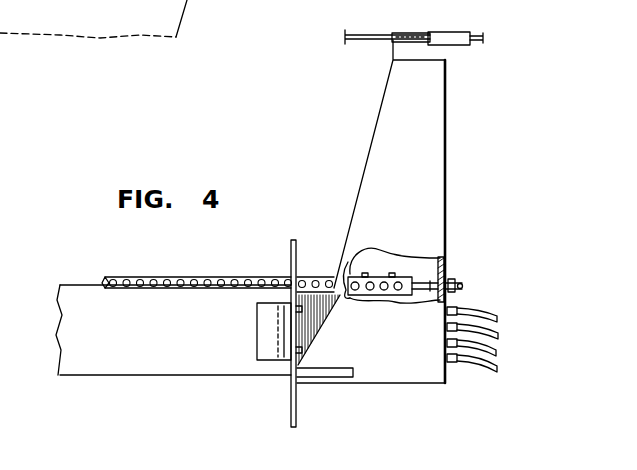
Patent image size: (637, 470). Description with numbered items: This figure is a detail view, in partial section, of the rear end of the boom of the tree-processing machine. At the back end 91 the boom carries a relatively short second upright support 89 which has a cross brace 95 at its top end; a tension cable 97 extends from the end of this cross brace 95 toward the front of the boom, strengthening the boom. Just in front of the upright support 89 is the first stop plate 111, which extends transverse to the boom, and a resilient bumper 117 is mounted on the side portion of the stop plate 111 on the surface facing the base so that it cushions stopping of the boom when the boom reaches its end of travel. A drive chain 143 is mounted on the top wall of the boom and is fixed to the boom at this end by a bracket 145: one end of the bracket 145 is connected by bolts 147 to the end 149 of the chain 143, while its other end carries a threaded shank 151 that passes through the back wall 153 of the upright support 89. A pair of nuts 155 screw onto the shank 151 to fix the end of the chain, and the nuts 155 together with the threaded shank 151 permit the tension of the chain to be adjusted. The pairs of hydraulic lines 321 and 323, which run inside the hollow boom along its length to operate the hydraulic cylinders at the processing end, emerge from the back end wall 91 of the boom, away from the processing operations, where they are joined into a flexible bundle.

The tension cable 97 is at (379, 21).
The cross brace 95 is at (452, 46).
The second upright support 89 is at (446, 152).
The back end 91 is at (450, 376).
The sheet S is at (189, 378).
The drive chain 143 is at (197, 277).
The first stop plate 111 is at (288, 263).
The resilient bumper 117 is at (257, 329).
The end of the chain 149 is at (383, 277).
The bracket 145 is at (402, 277).
The bolts 147 is at (349, 299).
The back wall 153 is at (444, 263).
The threaded shank 151 is at (463, 288).
The nuts 155 is at (454, 280).
The hydraulic lines 321 is at (494, 322).
The hydraulic lines 323 is at (494, 364).